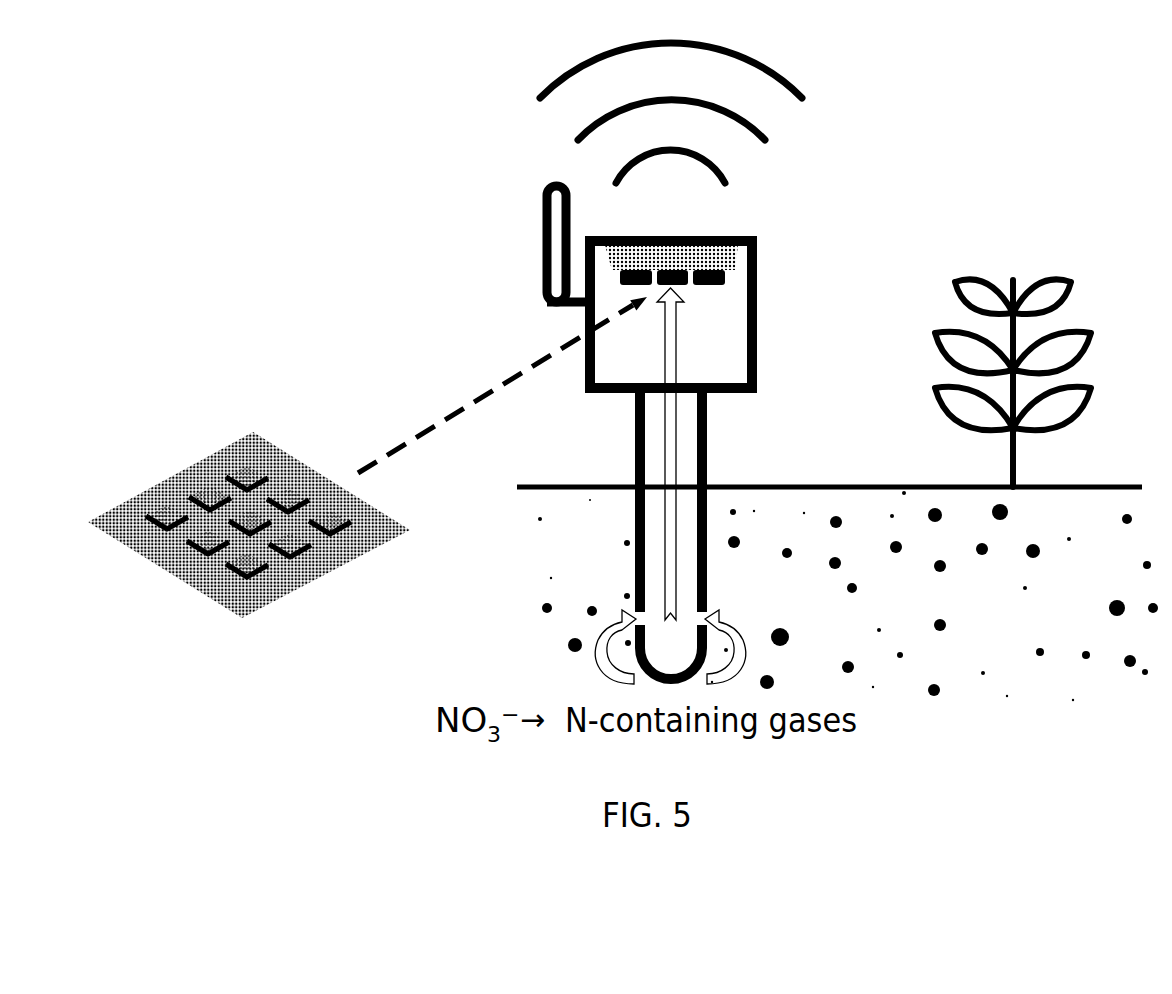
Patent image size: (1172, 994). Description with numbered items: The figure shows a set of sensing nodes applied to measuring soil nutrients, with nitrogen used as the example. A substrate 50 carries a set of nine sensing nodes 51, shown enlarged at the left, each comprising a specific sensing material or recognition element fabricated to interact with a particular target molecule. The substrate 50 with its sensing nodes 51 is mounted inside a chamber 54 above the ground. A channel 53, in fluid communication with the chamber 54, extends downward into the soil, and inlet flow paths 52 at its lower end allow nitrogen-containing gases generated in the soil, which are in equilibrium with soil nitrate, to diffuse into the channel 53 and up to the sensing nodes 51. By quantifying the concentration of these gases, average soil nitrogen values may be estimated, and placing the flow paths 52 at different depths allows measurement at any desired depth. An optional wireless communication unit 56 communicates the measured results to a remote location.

The substrate 50 is at (733, 252).
The sensing node 51 is at (715, 282).
The flow path 52 is at (660, 477).
The channel 53 is at (708, 428).
The chamber 54 is at (755, 340).
The wireless communication unit 56 is at (542, 275).